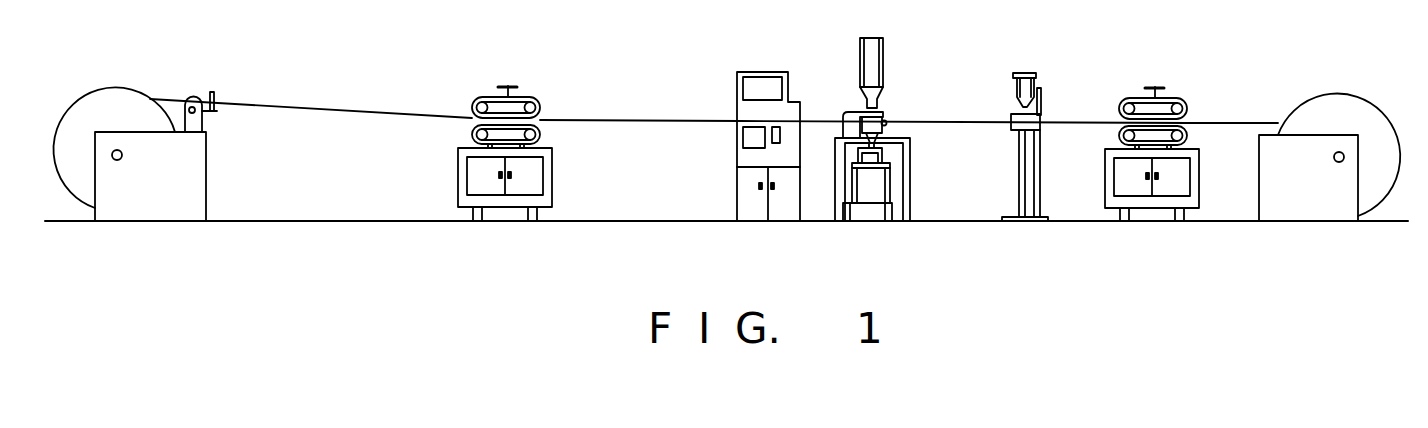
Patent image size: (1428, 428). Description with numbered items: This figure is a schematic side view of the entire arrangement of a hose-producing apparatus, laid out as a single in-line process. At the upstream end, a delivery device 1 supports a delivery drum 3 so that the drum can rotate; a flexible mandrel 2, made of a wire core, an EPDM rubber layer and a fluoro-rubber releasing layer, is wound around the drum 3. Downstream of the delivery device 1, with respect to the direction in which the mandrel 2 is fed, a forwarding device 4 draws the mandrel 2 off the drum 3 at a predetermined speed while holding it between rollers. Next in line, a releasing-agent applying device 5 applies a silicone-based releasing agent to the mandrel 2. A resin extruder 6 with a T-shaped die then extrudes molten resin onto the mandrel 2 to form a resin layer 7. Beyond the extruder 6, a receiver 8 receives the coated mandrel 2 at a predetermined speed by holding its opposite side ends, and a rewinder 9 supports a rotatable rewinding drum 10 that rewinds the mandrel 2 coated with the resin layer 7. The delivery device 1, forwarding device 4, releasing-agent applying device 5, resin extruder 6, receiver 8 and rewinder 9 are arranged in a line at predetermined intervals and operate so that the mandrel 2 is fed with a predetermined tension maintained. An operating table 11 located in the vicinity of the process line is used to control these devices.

The delivery device 1 is at (1295, 147).
The flexible mandrel 2 is at (1225, 122).
The delivery drum 3 is at (1340, 105).
The forwarding device 4 is at (1135, 95).
The releasing-agent applying device 5 is at (1013, 105).
The resin extruder 6 is at (883, 108).
The resin layer 7 is at (643, 118).
The receiver 8 is at (540, 101).
The rewinder 9 is at (192, 182).
The rewinding drum 10 is at (118, 101).
The operating table 11 is at (790, 88).